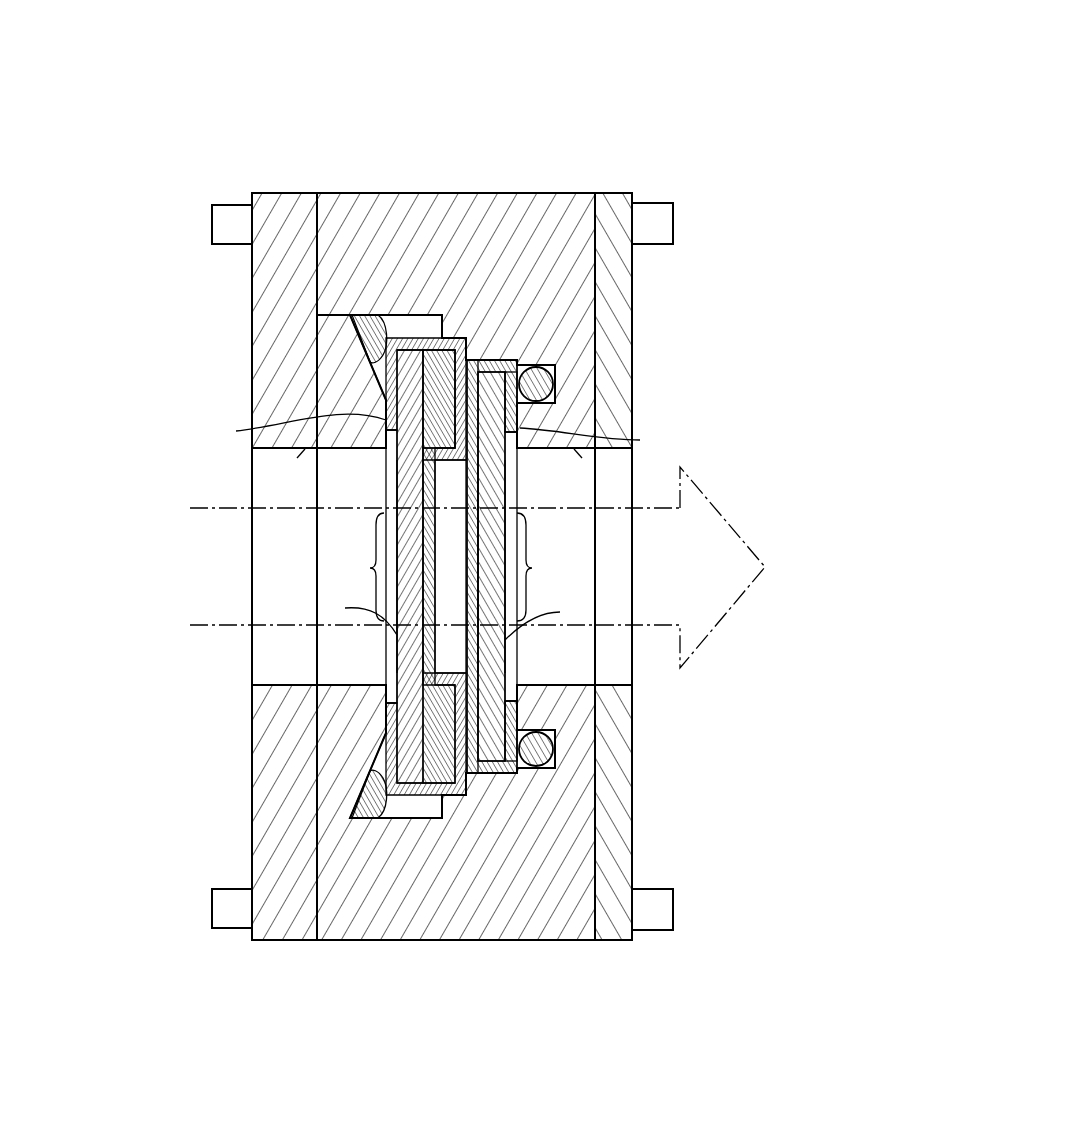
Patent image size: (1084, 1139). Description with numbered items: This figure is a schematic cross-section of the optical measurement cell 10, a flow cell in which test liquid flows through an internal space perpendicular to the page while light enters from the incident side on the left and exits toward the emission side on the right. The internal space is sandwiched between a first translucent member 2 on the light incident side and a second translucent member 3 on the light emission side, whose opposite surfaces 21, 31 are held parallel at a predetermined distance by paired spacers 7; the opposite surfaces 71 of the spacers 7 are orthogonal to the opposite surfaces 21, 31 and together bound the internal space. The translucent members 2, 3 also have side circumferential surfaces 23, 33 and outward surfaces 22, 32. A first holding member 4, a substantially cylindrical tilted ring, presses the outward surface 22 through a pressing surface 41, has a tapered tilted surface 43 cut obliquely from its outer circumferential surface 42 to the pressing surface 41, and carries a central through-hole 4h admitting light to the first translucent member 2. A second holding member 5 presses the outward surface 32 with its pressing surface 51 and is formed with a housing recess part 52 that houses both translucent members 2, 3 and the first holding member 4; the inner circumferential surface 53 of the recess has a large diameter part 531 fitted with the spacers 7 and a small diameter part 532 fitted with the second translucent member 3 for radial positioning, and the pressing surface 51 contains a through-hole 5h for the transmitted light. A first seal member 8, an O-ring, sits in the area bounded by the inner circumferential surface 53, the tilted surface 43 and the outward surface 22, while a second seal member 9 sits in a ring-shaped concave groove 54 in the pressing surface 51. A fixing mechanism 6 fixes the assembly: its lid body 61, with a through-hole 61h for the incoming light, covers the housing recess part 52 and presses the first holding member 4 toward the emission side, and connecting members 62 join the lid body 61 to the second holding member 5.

The optical measurement cell 10 is at (146, 76).
The fixing mechanism 6 is at (198, 172).
The lid body 61 is at (252, 318).
The through-hole 61h is at (287, 528).
The connecting members 62 is at (212, 222).
The first holding member 4 is at (330, 752).
The through-hole 4h is at (338, 528).
The pressing surface 41 is at (412, 345).
The outer circumferential surface 42 is at (332, 313).
The tilted surface 43 is at (353, 315).
The second holding member 5 is at (600, 768).
The through-hole 5h is at (568, 528).
The pressing surface 51 is at (505, 362).
The housing recess part 52 is at (438, 348).
The inner circumferential surface 53 is at (438, 790).
The large diameter part 531 is at (469, 360).
The small diameter part 532 is at (522, 430).
The ring-shaped concave groove 54 is at (553, 383).
The spacers 7 is at (466, 340).
The opposite surfaces 71 is at (392, 445).
The first seal member 8 is at (360, 800).
The second seal member 9 is at (553, 750).
The first translucent member 2 is at (400, 800).
The opposite surface 21 is at (430, 632).
The outward surface 22 is at (405, 655).
The side circumferential surface 23 is at (398, 342).
The second translucent member 3 is at (490, 765).
The opposite surface 31 is at (480, 470).
The outward surface 32 is at (505, 478).
The side circumferential surface 33 is at (520, 365).